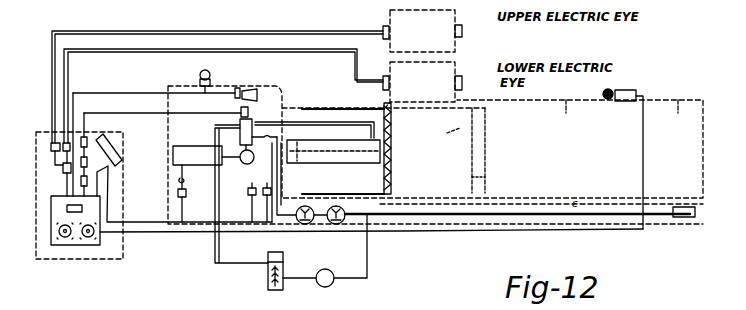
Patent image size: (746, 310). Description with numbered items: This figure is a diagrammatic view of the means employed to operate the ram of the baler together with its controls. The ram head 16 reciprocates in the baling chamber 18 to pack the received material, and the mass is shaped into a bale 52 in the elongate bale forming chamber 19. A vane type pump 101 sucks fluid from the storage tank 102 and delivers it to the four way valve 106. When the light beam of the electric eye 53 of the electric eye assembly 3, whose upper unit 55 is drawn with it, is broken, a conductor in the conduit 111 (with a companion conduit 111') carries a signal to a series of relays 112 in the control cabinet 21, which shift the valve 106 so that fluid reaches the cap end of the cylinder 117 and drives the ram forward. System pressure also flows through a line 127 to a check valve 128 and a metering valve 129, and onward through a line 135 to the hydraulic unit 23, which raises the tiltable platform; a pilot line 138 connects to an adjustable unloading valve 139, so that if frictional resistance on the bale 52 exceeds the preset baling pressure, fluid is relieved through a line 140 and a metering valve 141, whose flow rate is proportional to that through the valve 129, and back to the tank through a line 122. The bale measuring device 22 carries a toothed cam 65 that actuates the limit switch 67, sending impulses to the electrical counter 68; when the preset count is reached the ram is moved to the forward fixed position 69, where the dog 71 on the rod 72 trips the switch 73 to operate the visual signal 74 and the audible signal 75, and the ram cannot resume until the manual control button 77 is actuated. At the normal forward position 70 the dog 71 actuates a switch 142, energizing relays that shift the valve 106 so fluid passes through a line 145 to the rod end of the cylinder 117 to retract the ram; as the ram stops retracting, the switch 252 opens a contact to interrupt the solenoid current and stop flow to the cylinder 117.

The electric eye assembly 3 is at (452, 12).
The upper electric eye 55 is at (463, 27).
The electric eye 53 is at (463, 78).
The conduit 111 is at (226, 88).
The electric lead 111' is at (220, 78).
The visual signal 74 is at (200, 74).
The audible signal 75 is at (249, 88).
The manual control button 77 is at (113, 157).
The series of relays 112 is at (63, 166).
The control cabinet 21 is at (37, 217).
The electrical counter 68 is at (78, 245).
The storage tank 102 is at (173, 158).
The dog 71 is at (184, 182).
The switch 252 is at (178, 198).
The line 122 is at (215, 253).
The four way valve 106 is at (250, 125).
The vane type pump 101 is at (238, 151).
The switch 142 is at (263, 190).
The line 127 is at (273, 169).
The pilot line 138 is at (278, 180).
The switch 73 is at (282, 190).
The line 145 is at (292, 124).
The cylinder 117 is at (358, 140).
The ram head 16 is at (384, 187).
The rod 72 is at (392, 167).
The baling chamber 18 is at (483, 125).
The forward fixed position 69 is at (486, 166).
The normal operating stroke position 70 is at (486, 180).
The bale forming chamber 19 is at (566, 100).
The toothed cam 65 is at (604, 91).
The bale length measuring device 22 is at (624, 83).
The limit switch 67 is at (637, 90).
The bale 52 is at (684, 96).
The line 135 is at (524, 212).
The hydraulic unit 23 is at (684, 217).
The check valve 128 is at (306, 224).
The metering valve 129 is at (336, 224).
The line 140 is at (368, 248).
The metering valve 141 is at (331, 284).
The adjustable unloading valve 139 is at (268, 286).